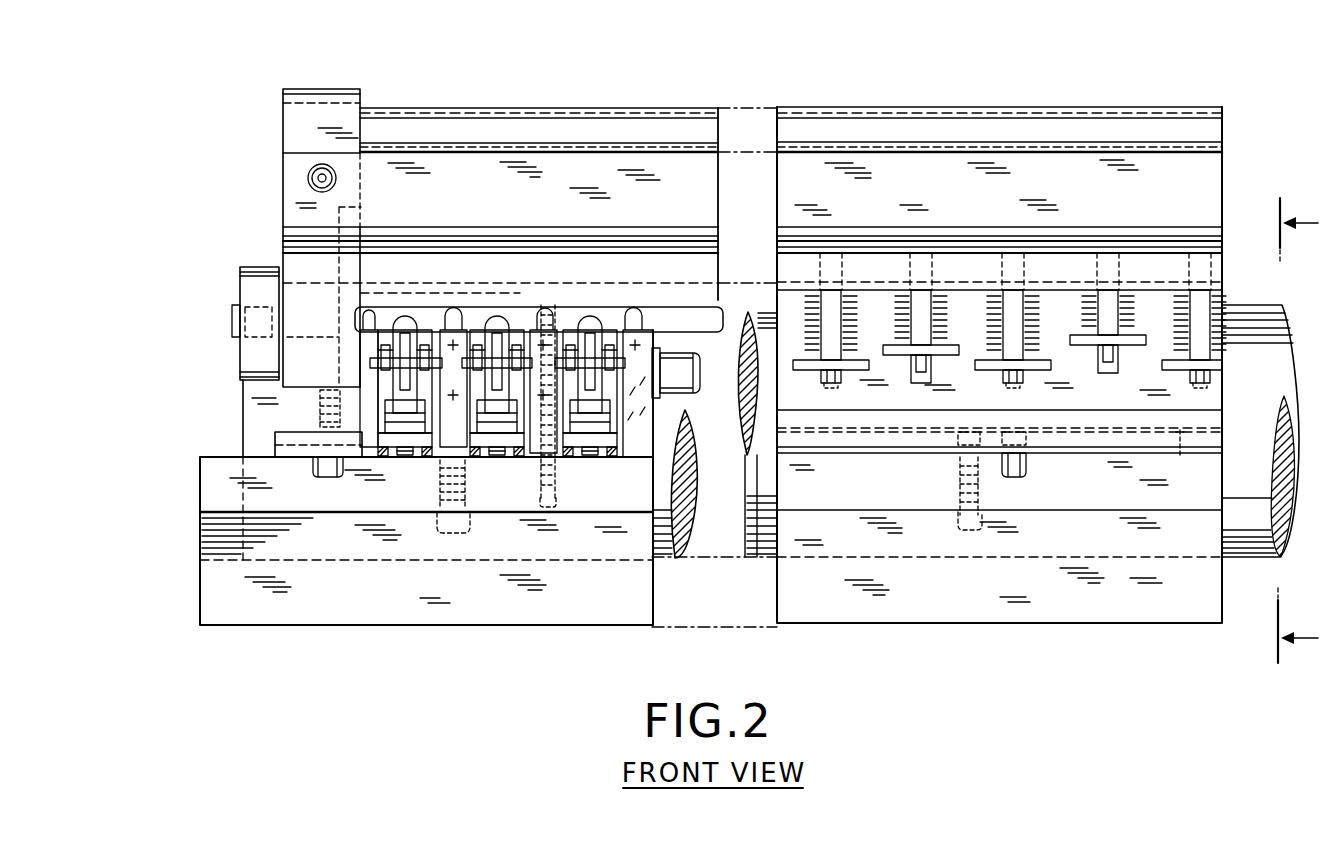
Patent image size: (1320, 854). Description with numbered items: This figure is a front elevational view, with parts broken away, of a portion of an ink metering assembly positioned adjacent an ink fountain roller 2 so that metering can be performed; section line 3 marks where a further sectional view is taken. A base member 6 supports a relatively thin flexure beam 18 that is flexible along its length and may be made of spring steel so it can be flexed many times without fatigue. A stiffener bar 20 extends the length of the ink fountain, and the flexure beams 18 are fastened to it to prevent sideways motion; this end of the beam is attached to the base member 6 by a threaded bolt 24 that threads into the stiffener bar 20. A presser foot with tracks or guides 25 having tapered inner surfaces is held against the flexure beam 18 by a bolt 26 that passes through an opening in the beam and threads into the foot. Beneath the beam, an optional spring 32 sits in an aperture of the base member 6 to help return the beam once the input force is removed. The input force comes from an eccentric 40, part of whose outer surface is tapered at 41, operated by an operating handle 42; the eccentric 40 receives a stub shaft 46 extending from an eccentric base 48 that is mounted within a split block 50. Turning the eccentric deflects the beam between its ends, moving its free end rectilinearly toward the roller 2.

The ink fountain roller 2 is at (660, 547).
The section line 3- 3 is at (1298, 433).
The base member 6 is at (268, 441).
The flexure beam 18 is at (556, 457).
The stiffener bar 20 is at (842, 454).
The threaded bolt 24 is at (1022, 461).
The tracks or guides 25 is at (480, 407).
The bolt 26 is at (500, 455).
The spring 32 is at (595, 456).
The eccentric 40 is at (406, 338).
The tapered outer surface 41 is at (393, 407).
The operating handle 42 is at (380, 363).
The stub shaft 46 is at (691, 380).
The eccentric base 48 is at (657, 377).
The split block 50 is at (455, 313).